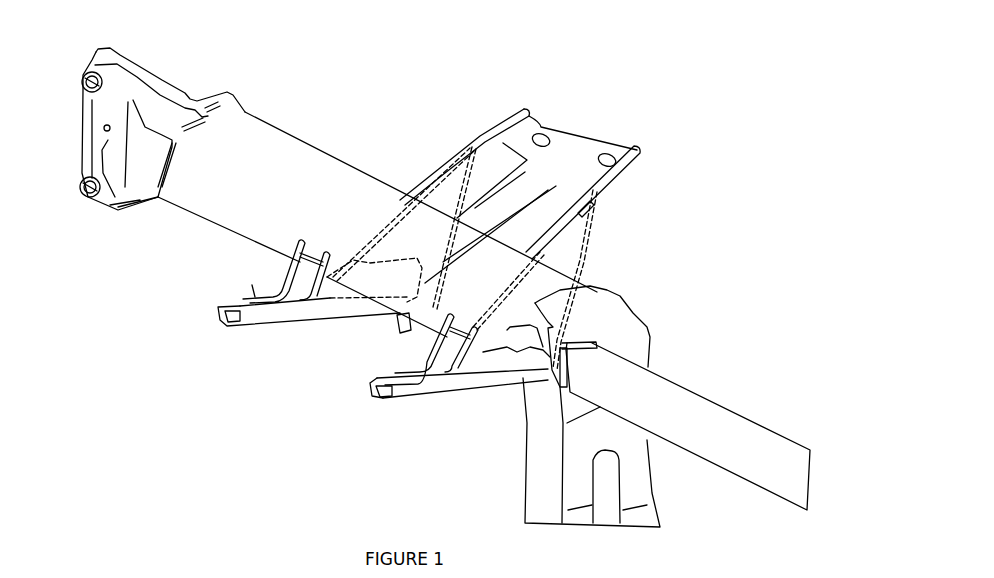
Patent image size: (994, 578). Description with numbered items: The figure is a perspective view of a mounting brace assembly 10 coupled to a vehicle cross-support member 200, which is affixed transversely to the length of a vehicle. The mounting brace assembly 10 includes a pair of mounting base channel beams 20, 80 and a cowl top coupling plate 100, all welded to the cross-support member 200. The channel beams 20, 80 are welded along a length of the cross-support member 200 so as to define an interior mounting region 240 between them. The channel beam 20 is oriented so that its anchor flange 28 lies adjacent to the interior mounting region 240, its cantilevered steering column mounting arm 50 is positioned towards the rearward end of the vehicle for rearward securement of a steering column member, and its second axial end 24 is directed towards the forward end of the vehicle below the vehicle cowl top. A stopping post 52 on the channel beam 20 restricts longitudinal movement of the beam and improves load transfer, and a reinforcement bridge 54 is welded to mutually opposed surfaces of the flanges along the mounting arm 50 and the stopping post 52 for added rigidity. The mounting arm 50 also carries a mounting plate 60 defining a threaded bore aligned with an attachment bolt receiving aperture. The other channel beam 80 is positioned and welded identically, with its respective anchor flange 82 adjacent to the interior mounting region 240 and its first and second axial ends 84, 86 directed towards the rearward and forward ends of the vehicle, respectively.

The mounting brace assembly 10 is at (455, 79).
The mounting base channel beam 20 is at (454, 406).
The second axial end 24 is at (573, 357).
The anchor flange 28 is at (568, 252).
The steering column mounting arm 50 is at (413, 390).
The stopping post 52 is at (489, 360).
The reinforcement bridge 54 is at (353, 380).
The mounting plate 60 is at (387, 398).
The mounting base channel beam 80 is at (250, 296).
The anchor flange 82 is at (447, 197).
The first axial end 84 is at (220, 315).
The second axial end 86 is at (565, 208).
The cowl top coupling plate 100 is at (563, 143).
The vehicle cross-support member 200 is at (240, 150).
The interior mounting region 240 is at (322, 362).